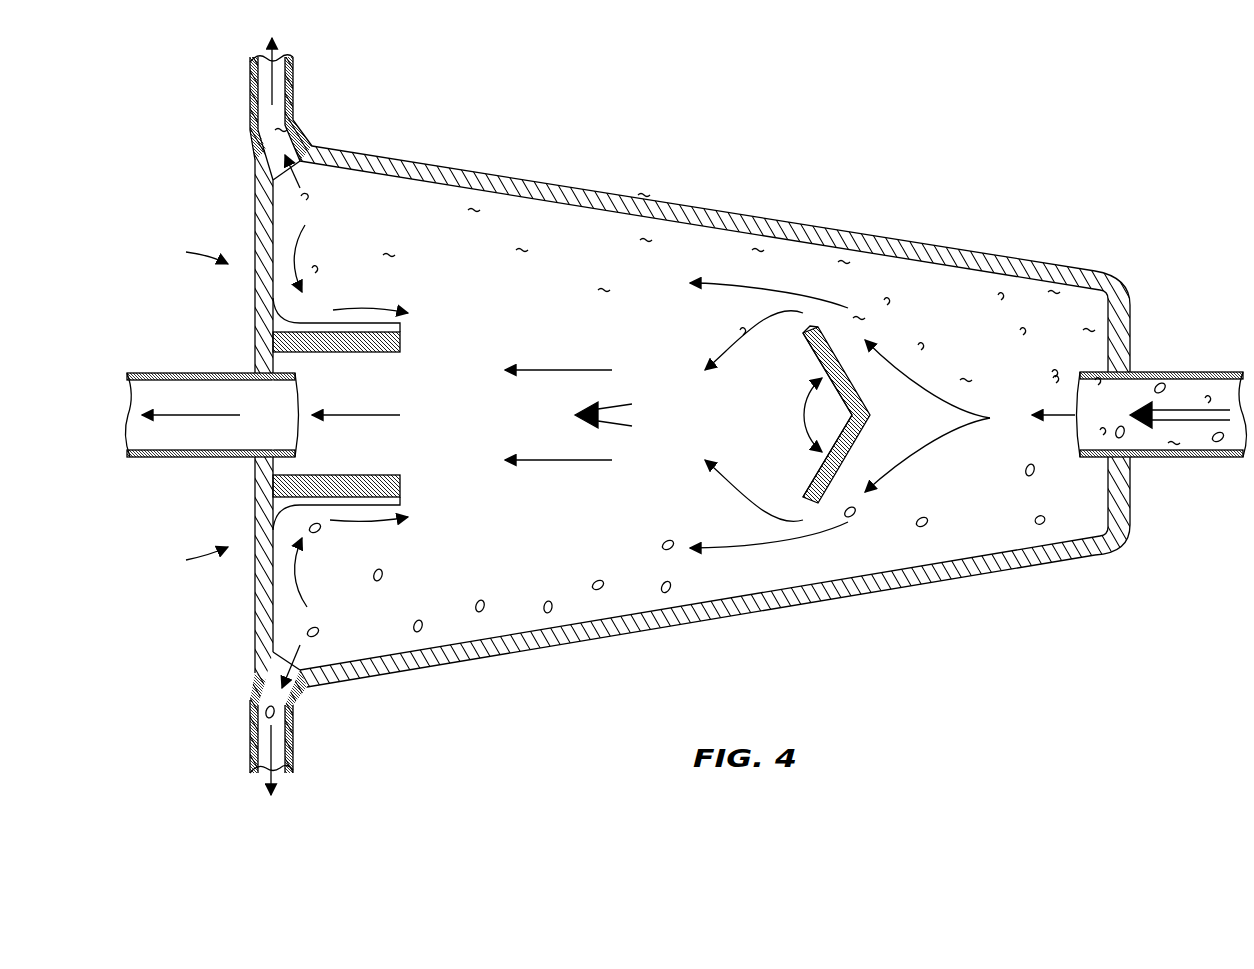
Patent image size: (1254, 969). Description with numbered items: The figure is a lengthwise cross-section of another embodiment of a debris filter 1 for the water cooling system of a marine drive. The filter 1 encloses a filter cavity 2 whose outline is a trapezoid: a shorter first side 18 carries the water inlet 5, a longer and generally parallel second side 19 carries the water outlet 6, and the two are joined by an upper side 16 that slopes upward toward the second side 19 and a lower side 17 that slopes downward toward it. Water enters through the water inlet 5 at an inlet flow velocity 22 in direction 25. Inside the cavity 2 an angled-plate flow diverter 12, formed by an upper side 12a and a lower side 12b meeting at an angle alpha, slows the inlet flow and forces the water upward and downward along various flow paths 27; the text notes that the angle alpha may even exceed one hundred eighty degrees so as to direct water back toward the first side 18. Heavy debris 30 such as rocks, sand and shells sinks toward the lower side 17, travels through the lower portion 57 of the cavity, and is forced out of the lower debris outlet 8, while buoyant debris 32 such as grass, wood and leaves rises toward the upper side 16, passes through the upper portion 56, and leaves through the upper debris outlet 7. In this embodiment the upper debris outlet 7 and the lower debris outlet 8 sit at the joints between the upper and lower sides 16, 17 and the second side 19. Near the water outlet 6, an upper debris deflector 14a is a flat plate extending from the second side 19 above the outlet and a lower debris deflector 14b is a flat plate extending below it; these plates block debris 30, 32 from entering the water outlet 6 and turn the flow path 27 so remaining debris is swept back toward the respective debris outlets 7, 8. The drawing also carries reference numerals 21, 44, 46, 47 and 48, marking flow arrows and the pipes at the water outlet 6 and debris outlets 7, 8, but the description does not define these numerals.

The filter 1 is at (906, 90).
The filter cavity 2 is at (652, 292).
The water inlet 5 is at (1127, 372).
The water outlet 6 is at (278, 367).
The upper debris outlet 7 is at (258, 148).
The lower debris outlet 8 is at (258, 681).
The flow diverter 12 is at (832, 348).
The upper side of flow diverter 12a is at (813, 357).
The lower side of flow diverter 12b is at (813, 473).
The upper debris deflector 14a is at (400, 345).
The lower debris deflector 14b is at (400, 487).
The upper side 16 is at (668, 212).
The lower side 17 is at (755, 607).
The first side 18 is at (1127, 327).
The second side 19 is at (262, 326).
The gas outlet flow 21 is at (612, 400).
The inlet flow velocity 22 is at (1188, 405).
The inlet flow direction 25 is at (1050, 418).
The flow path 27 is at (300, 250).
The heavy debris 30 is at (318, 628).
The buoyant debris 32 is at (312, 195).
The drain flow 44 is at (270, 50).
The outlet pipe 46 is at (172, 372).
The upper drain pipe 47 is at (293, 78).
The lower drain pipe 48 is at (293, 750).
The upper portion 56 is at (190, 247).
The lower portion 57 is at (190, 564).